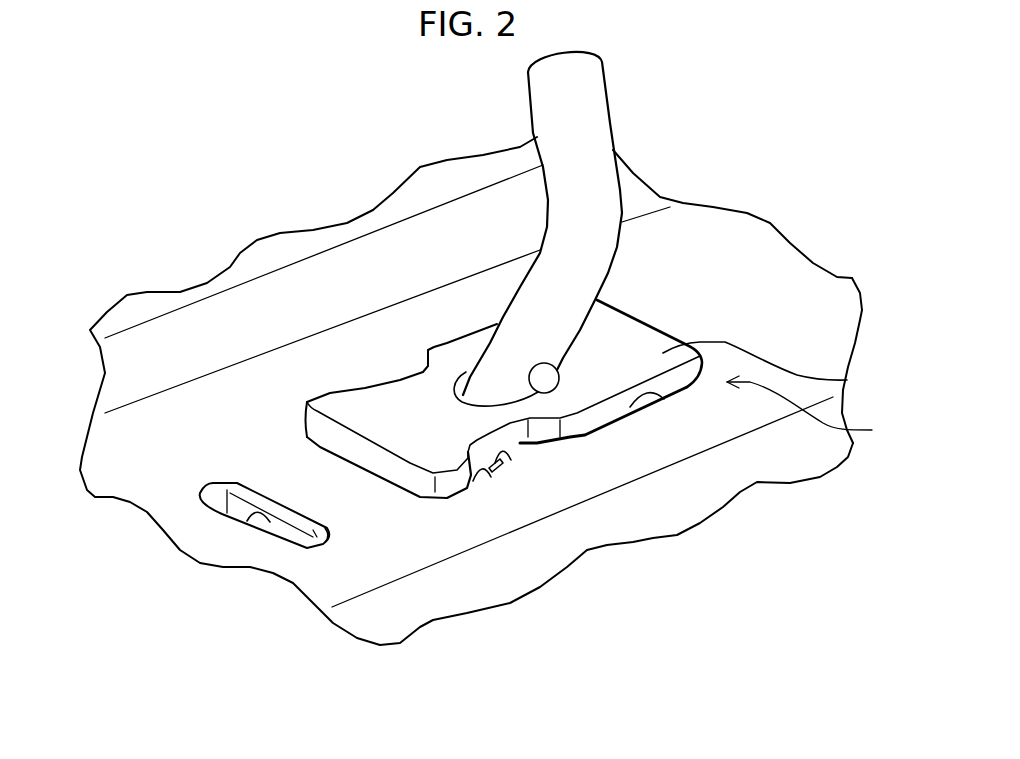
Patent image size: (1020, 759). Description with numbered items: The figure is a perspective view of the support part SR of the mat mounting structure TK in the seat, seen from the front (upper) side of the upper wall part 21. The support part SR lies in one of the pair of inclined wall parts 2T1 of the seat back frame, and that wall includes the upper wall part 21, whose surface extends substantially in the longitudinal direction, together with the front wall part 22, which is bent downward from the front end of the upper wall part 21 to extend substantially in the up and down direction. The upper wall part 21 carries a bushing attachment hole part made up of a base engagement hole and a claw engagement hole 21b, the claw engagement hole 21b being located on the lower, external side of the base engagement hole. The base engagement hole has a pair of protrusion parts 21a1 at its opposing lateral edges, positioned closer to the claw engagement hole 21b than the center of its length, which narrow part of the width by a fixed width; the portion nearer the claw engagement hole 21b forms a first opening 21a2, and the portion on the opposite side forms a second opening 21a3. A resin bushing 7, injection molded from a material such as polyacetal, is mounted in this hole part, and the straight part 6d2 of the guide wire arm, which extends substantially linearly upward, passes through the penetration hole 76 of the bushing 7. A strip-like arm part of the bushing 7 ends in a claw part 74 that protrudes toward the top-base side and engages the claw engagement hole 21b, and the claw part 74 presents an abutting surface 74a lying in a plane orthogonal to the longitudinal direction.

The mat mounting structure TK is at (837, 153).
The upper wall part 21 is at (710, 287).
The inclined wall part 2T1 is at (808, 325).
The front wall part 22 is at (580, 522).
The bushing 7 is at (847, 380).
The straight part 6d2 is at (590, 282).
The penetration hole 76 is at (558, 368).
The protrusion part 21a1 is at (500, 467).
The first opening 21a2 is at (492, 478).
The second opening 21a3 is at (663, 400).
The support part SR is at (815, 410).
The claw part 74 is at (253, 487).
The abutting surface 74a is at (327, 528).
The claw engagement hole 21b is at (243, 520).